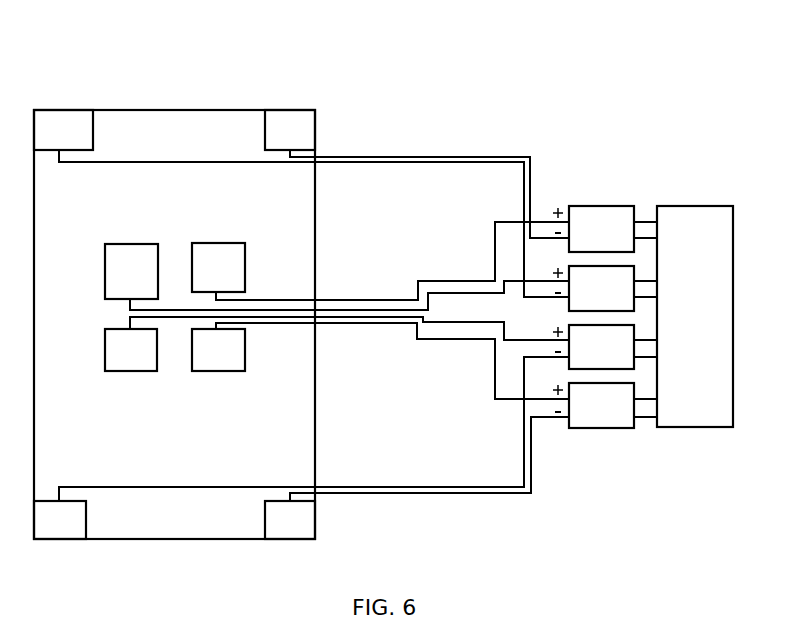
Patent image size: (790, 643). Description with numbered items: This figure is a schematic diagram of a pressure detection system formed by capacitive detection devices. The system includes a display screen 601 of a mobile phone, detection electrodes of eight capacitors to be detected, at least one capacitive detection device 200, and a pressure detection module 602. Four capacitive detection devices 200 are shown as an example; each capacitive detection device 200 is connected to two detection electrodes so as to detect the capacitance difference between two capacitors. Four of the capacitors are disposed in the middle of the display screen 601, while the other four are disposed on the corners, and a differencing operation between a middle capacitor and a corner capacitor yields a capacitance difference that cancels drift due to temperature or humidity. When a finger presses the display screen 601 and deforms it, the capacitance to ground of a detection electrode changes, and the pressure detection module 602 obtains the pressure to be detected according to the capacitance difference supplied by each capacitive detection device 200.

The display screen 601 is at (193, 110).
The pressure detection module 602 is at (695, 316).
The capacitive detection device 200 is at (605, 317).